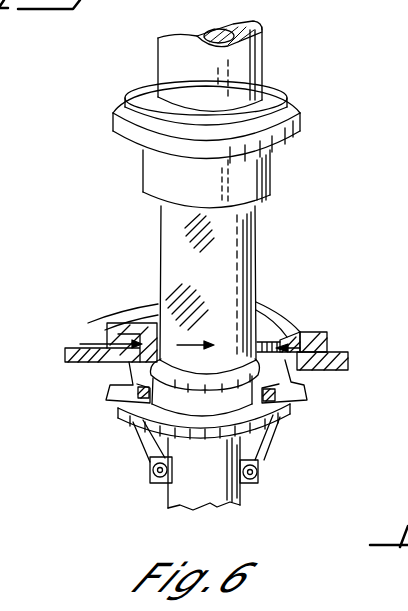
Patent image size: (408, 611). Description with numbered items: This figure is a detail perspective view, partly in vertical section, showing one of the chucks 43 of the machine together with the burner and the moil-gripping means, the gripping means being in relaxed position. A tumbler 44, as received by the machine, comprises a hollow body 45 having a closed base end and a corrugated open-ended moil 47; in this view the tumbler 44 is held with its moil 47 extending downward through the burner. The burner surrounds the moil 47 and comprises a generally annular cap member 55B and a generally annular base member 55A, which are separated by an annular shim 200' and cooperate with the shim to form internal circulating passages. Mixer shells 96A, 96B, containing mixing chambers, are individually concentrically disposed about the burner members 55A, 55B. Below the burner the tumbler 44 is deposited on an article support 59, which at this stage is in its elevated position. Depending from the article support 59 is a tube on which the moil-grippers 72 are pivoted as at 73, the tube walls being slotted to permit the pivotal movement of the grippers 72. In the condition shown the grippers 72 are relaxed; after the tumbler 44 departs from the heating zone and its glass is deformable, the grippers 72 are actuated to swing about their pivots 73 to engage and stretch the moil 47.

The chuck 43 is at (270, 158).
The tumbler 44 is at (266, 262).
The hollow body 45 is at (238, 242).
The moil 47 is at (196, 406).
The base member 55A is at (106, 366).
The cap member 55B is at (287, 338).
The article support 59 is at (285, 418).
The moil-gripper 72 is at (106, 402).
The pivot 73 is at (157, 480).
The mixer shell 96A is at (330, 352).
The mixer shell 96B is at (318, 332).
The annular shim 200' is at (156, 332).